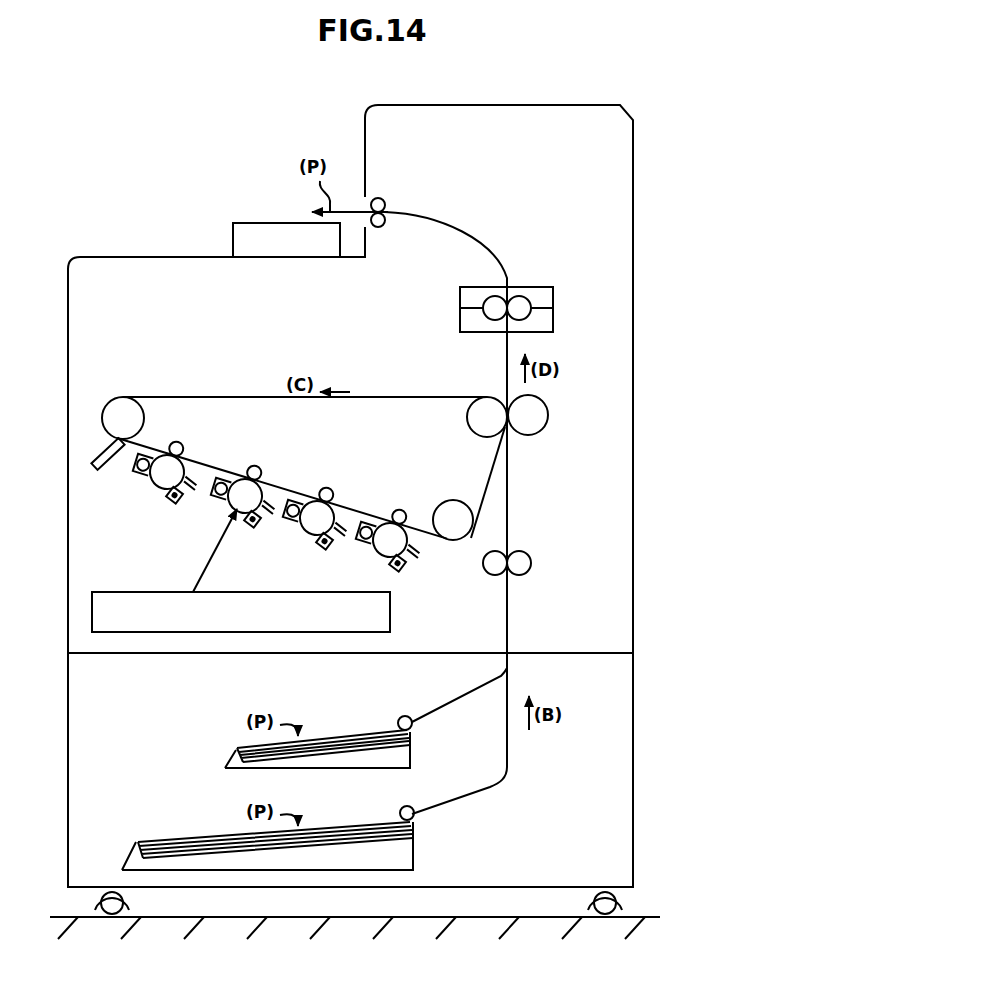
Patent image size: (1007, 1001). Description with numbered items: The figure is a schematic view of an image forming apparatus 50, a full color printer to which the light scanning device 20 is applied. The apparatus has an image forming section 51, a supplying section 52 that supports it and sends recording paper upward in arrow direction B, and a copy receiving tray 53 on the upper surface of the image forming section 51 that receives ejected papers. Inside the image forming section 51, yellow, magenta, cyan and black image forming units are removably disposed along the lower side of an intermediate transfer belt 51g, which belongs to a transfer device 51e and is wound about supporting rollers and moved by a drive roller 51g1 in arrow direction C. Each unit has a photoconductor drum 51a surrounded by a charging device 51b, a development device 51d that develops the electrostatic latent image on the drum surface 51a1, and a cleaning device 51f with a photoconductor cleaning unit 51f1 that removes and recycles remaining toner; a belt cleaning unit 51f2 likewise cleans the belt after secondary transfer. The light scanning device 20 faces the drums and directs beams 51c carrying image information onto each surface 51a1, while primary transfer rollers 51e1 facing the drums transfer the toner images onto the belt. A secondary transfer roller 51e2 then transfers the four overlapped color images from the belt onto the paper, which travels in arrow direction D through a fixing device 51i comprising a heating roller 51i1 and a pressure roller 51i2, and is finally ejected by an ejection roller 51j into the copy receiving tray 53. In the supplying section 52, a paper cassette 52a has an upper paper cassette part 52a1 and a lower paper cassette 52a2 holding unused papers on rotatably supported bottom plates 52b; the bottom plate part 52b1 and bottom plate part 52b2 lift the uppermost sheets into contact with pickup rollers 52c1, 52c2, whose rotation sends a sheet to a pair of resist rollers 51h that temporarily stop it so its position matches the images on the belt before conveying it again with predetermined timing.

The image forming apparatus 50 is at (641, 103).
The image forming section 51 is at (641, 367).
The supplying section 52 is at (405, 826).
The copy receiving tray 53 is at (263, 223).
The light scanning device 20 is at (135, 592).
The photoconductor drum 51a is at (374, 565).
The surface of the photoconductor drum 51a1 is at (425, 568).
The charging device 51b is at (403, 571).
The beams 51c is at (216, 552).
The development device 51d is at (367, 518).
The transfer device 51e is at (559, 442).
The primary transfer roller 51e1 is at (403, 508).
The secondary transfer roller 51e2 is at (548, 422).
The cleaning device 51f is at (472, 543).
The photoconductor cleaning unit 51f1 is at (422, 553).
The belt cleaning device 51f2 is at (106, 470).
The intermediate transfer belt 51g is at (390, 397).
The drive roller 51g1 is at (470, 400).
The resist rollers 51h is at (531, 563).
The fixing device 51i is at (508, 292).
The heating roller 51i1 is at (460, 308).
The pressure roller 51i2 is at (553, 308).
The ejection roller 51j is at (386, 205).
The paper cassette 52a is at (295, 791).
The upper paper cassette part 52a1 is at (410, 752).
The lower paper cassette 52a2 is at (413, 858).
The bottom plates 52b is at (258, 870).
The bottom plate part 52b1 is at (323, 768).
The bottom plate part 52b2 is at (305, 865).
The pickup roller 52c1 is at (401, 716).
The pickup roller 52c2 is at (403, 806).